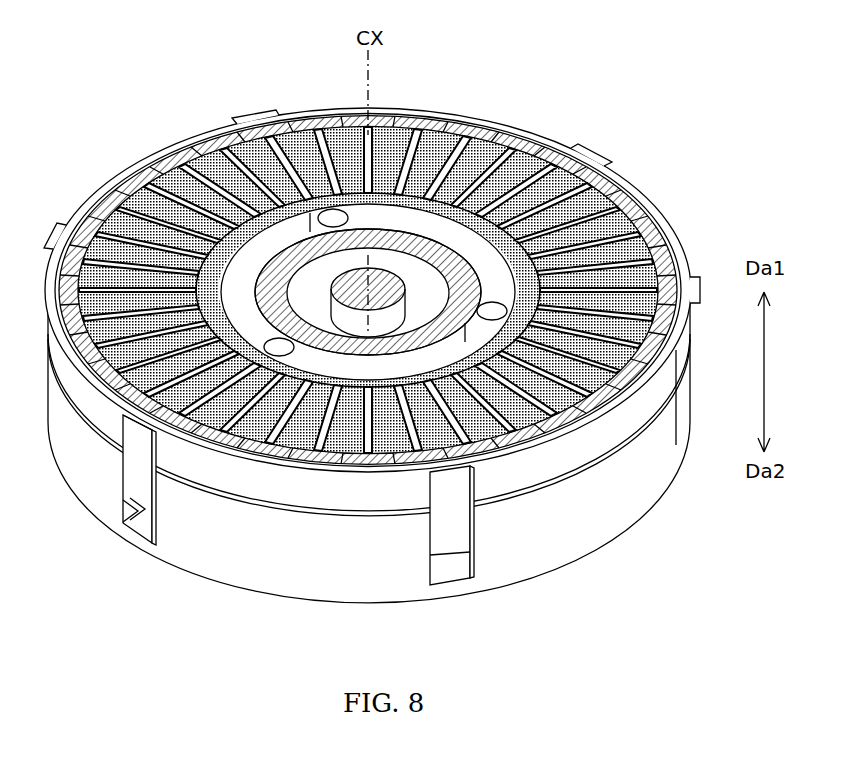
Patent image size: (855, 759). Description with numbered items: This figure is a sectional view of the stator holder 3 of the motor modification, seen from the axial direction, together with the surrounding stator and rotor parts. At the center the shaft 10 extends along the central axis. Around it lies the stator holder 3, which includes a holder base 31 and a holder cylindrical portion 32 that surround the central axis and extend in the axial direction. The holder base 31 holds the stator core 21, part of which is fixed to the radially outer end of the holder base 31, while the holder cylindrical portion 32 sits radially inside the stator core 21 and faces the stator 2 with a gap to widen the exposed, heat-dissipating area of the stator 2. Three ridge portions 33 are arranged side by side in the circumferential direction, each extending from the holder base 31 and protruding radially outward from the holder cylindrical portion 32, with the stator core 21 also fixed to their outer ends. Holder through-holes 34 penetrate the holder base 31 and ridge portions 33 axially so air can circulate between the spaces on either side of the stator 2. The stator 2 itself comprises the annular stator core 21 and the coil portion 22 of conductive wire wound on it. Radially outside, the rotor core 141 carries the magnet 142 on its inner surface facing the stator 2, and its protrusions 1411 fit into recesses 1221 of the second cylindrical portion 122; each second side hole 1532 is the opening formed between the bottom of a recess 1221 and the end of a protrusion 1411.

The stator 2 is at (178, 160).
The stator core 21 is at (148, 220).
The coil portion 22 is at (212, 168).
The stator holder 3 is at (493, 266).
The holder base 31 is at (487, 290).
The holder cylindrical portion 32 is at (423, 247).
The ridge portion 33 is at (316, 228).
The holder through-hole 34 is at (326, 202).
The shaft 10 is at (386, 284).
The second cylindrical portion 122 is at (600, 500).
The recess 1221 is at (168, 491).
The rotor core 141 is at (640, 205).
The magnet 142 is at (672, 237).
The protrusion 1411 is at (137, 478).
The second side hole 1532 is at (126, 517).